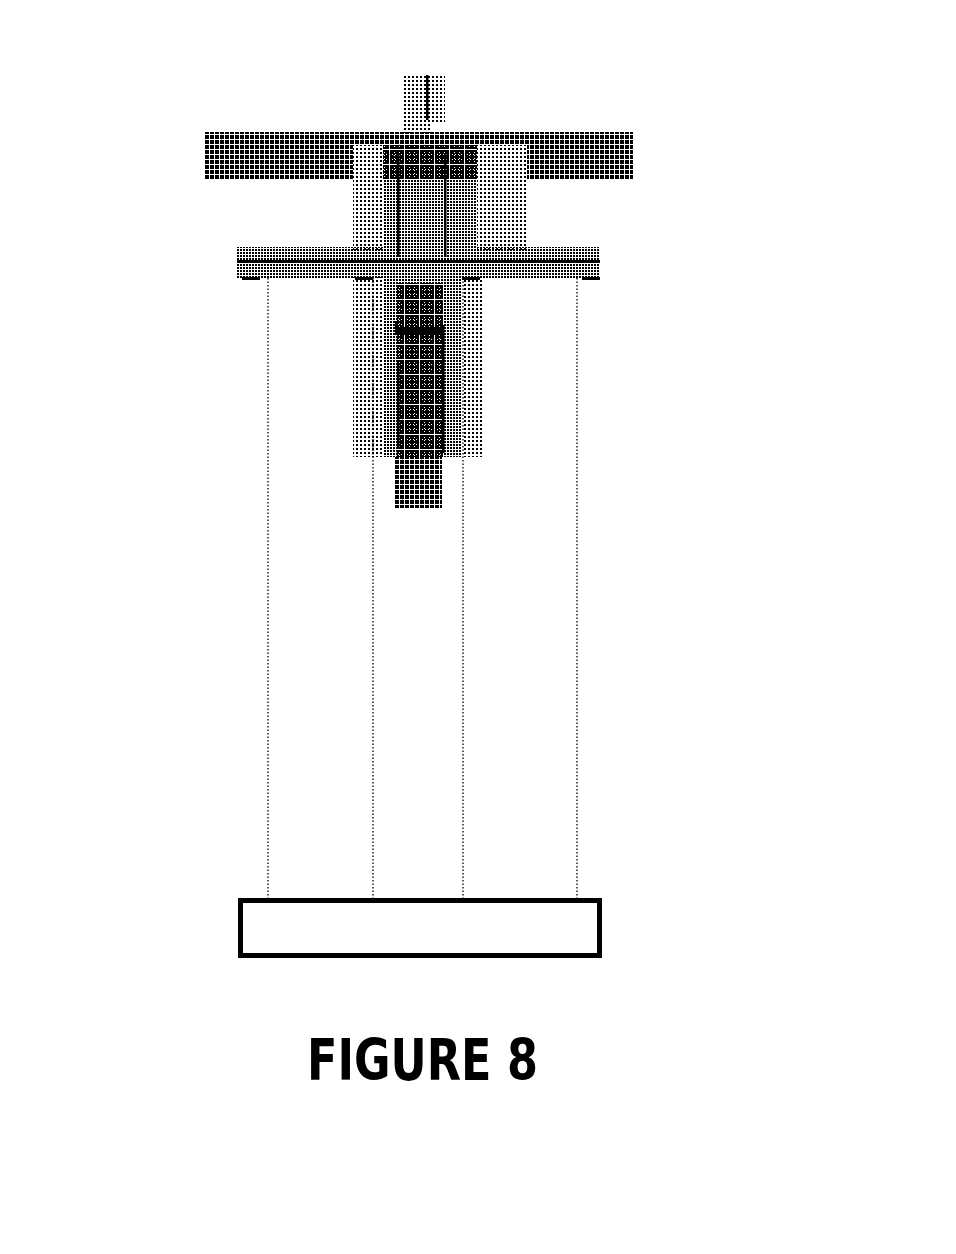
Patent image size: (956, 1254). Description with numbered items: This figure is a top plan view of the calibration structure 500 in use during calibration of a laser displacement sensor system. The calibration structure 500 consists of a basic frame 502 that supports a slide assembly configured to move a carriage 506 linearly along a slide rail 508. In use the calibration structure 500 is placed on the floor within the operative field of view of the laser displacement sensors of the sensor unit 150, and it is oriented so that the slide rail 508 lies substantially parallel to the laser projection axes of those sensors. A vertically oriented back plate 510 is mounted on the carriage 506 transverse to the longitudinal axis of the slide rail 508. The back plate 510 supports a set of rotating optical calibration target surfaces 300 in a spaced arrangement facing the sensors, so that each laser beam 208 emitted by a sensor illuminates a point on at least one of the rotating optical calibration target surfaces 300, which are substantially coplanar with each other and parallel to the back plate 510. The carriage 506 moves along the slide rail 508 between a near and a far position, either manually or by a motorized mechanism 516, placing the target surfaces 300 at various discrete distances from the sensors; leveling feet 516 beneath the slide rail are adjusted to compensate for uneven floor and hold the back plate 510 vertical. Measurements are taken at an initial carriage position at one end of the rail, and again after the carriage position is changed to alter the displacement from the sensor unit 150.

The calibration structure 500 is at (527, 83).
The basic frame 502 is at (567, 155).
The back plate 510 is at (600, 258).
The rotating optical calibration target surfaces 300 is at (250, 280).
The carriage 506 is at (440, 299).
The slide rail 508 is at (462, 458).
The leveling feet 516 is at (213, 145).
The laser beam 208 is at (258, 715).
The sensor unit 150 is at (573, 921).